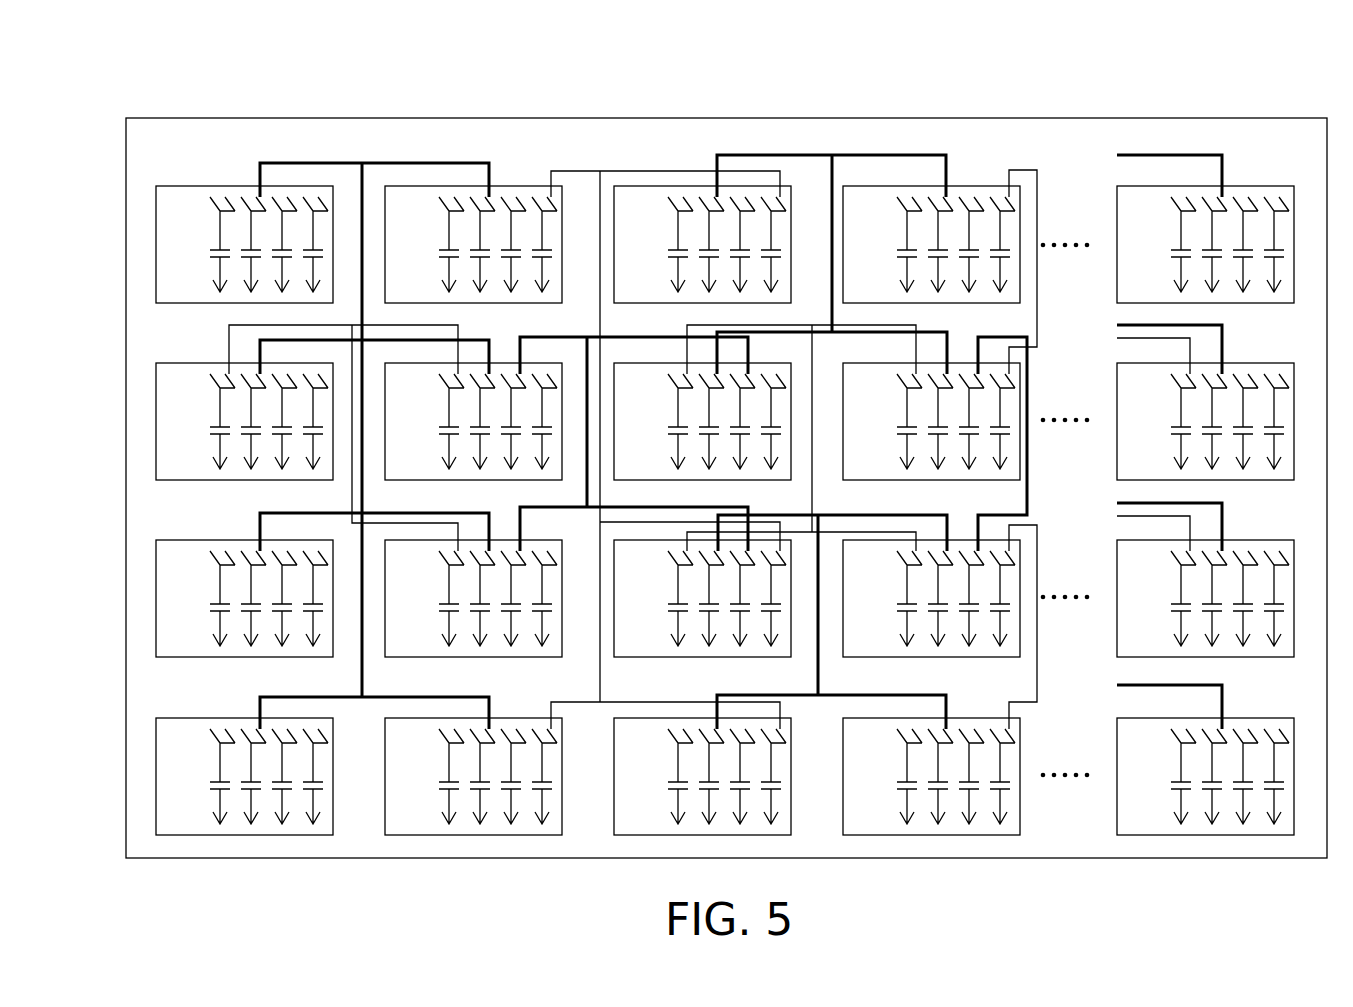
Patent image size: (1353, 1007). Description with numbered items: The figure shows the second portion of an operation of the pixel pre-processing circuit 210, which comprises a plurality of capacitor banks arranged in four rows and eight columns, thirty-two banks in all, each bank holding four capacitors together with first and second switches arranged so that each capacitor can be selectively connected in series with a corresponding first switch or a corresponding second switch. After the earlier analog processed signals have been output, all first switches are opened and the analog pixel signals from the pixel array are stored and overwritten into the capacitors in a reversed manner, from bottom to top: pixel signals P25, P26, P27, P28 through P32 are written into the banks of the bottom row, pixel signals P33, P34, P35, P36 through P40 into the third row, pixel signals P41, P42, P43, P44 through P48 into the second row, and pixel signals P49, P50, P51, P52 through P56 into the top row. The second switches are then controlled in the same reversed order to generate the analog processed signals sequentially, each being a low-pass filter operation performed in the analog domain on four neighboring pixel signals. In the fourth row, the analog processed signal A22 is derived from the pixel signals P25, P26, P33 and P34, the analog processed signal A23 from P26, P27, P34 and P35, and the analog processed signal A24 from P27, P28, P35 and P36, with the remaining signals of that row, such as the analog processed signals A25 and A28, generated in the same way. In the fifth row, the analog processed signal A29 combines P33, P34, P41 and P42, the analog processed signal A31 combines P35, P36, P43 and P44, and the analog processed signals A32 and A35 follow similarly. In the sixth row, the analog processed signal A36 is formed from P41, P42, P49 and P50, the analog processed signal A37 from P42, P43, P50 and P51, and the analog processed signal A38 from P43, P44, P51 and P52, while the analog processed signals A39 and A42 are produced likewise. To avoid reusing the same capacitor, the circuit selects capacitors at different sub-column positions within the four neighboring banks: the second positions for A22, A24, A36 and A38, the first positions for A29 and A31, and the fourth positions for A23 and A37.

The pixel pre-processing circuit 210 is at (1190, 100).
The analog processed signal A36 is at (374, 417).
The analog processed signal A37 is at (665, 420).
The analog processed signal A38 is at (832, 264).
The analog processed signal A39 is at (1031, 261).
The analog processed signal A42 is at (1169, 163).
The analog processed signal A29 is at (314, 436).
The analog processed signal A31 is at (801, 438).
The analog processed signal A32 is at (988, 432).
The analog processed signal A35 is at (1146, 348).
The analog processed signal A22 is at (374, 700).
The analog processed signal A23 is at (665, 704).
The analog processed signal A24 is at (834, 701).
The analog processed signal A25 is at (1001, 627).
The analog processed signal A28 is at (1194, 706).
The pixel signal P49 is at (244, 244).
The pixel signal P50 is at (473, 244).
The pixel signal P51 is at (702, 244).
The pixel signal P52 is at (931, 244).
The pixel signal P56 is at (1205, 244).
The pixel signal P41 is at (244, 421).
The pixel signal P42 is at (473, 421).
The pixel signal P43 is at (702, 421).
The pixel signal P44 is at (931, 421).
The pixel signal P48 is at (1205, 421).
The pixel signal P33 is at (244, 598).
The pixel signal P34 is at (473, 598).
The pixel signal P35 is at (702, 598).
The pixel signal P36 is at (931, 598).
The pixel signal P40 is at (1205, 598).
The pixel signal P25 is at (244, 776).
The pixel signal P26 is at (473, 776).
The pixel signal P27 is at (702, 776).
The pixel signal P28 is at (931, 776).
The pixel signal P32 is at (1205, 776).